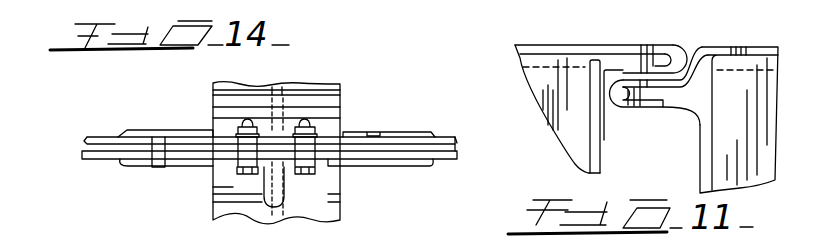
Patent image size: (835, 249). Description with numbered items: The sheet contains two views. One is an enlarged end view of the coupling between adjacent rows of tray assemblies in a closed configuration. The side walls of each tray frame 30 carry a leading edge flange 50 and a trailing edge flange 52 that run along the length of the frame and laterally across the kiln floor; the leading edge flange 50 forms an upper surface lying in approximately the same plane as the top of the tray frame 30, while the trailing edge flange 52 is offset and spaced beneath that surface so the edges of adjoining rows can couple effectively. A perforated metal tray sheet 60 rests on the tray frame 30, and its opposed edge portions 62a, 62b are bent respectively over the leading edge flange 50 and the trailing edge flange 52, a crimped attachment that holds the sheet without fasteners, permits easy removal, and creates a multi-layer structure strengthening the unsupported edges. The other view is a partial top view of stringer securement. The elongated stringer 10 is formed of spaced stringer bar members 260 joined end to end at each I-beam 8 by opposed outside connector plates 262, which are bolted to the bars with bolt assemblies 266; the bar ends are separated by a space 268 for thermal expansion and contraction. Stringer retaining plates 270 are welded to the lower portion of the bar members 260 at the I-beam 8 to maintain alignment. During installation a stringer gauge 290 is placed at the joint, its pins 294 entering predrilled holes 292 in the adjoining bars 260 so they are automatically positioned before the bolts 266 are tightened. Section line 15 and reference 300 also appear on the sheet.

In FIG. 14, the I-beam 8 is at (318, 98).
In FIG. 14, the stringer 10 is at (457, 151).
In FIG. 14, the section line 15 is at (137, 185).
In FIG. 14, the stringer bar member 260 is at (105, 137).
In FIG. 14, the outside connector plate 262 is at (328, 128).
In FIG. 14, the bolt assembly 266 is at (245, 120).
In FIG. 14, the space 268 is at (340, 198).
In FIG. 14, the stringer retaining plate 270 is at (162, 135).
In FIG. 14, the stringer gauge 290 is at (130, 166).
In FIG. 14, the predrilled hole 292 is at (152, 133).
In FIG. 14, the pin 294 is at (165, 137).
In FIG. 11, the tray frame 30 is at (590, 170).
In FIG. 11, the leading edge flange 50 is at (613, 62).
In FIG. 11, the trailing edge flange 52 is at (675, 107).
In FIG. 11, the tray sheet 60 is at (525, 48).
In FIG. 11, the edge portion 62a is at (641, 46).
In FIG. 11, the edge portion 62b is at (609, 112).
In FIG. 11, the joint 300 is at (682, 240).